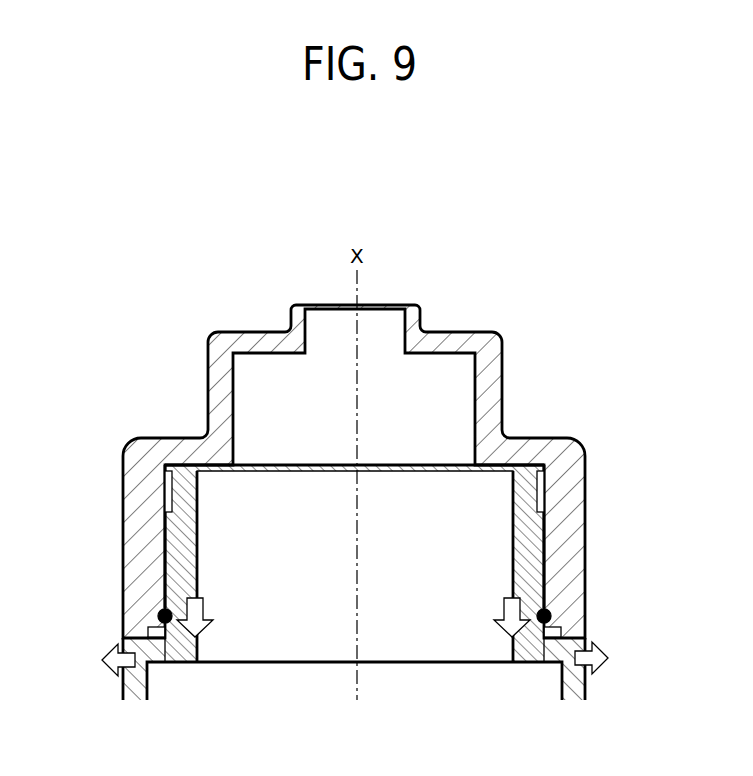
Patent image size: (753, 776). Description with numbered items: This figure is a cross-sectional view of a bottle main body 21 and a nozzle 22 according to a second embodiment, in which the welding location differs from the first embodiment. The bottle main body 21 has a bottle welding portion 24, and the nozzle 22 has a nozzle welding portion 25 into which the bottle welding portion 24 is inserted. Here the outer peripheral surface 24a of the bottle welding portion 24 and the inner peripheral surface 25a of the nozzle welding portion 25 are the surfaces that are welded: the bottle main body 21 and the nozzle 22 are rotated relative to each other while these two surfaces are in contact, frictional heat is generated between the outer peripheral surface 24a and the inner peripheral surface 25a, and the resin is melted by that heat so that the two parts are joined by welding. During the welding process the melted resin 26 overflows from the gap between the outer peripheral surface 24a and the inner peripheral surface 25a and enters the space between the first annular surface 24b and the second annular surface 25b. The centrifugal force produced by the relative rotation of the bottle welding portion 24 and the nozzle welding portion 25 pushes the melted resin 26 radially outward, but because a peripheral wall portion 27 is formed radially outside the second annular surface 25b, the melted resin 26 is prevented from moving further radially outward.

The bottle main body 21 is at (91, 692).
The nozzle 22 is at (371, 513).
The bottle welding portion 24 is at (168, 542).
The outer peripheral surface of the bottle welding portion 24a is at (170, 562).
The first annular surface 24b is at (583, 622).
The nozzle welding portion 25 is at (578, 522).
The inner peripheral surface of the nozzle welding portion 25a is at (538, 566).
The second annular surface 25b is at (557, 634).
The melted resin 26 is at (156, 613).
The peripheral wall portion 27 is at (584, 632).